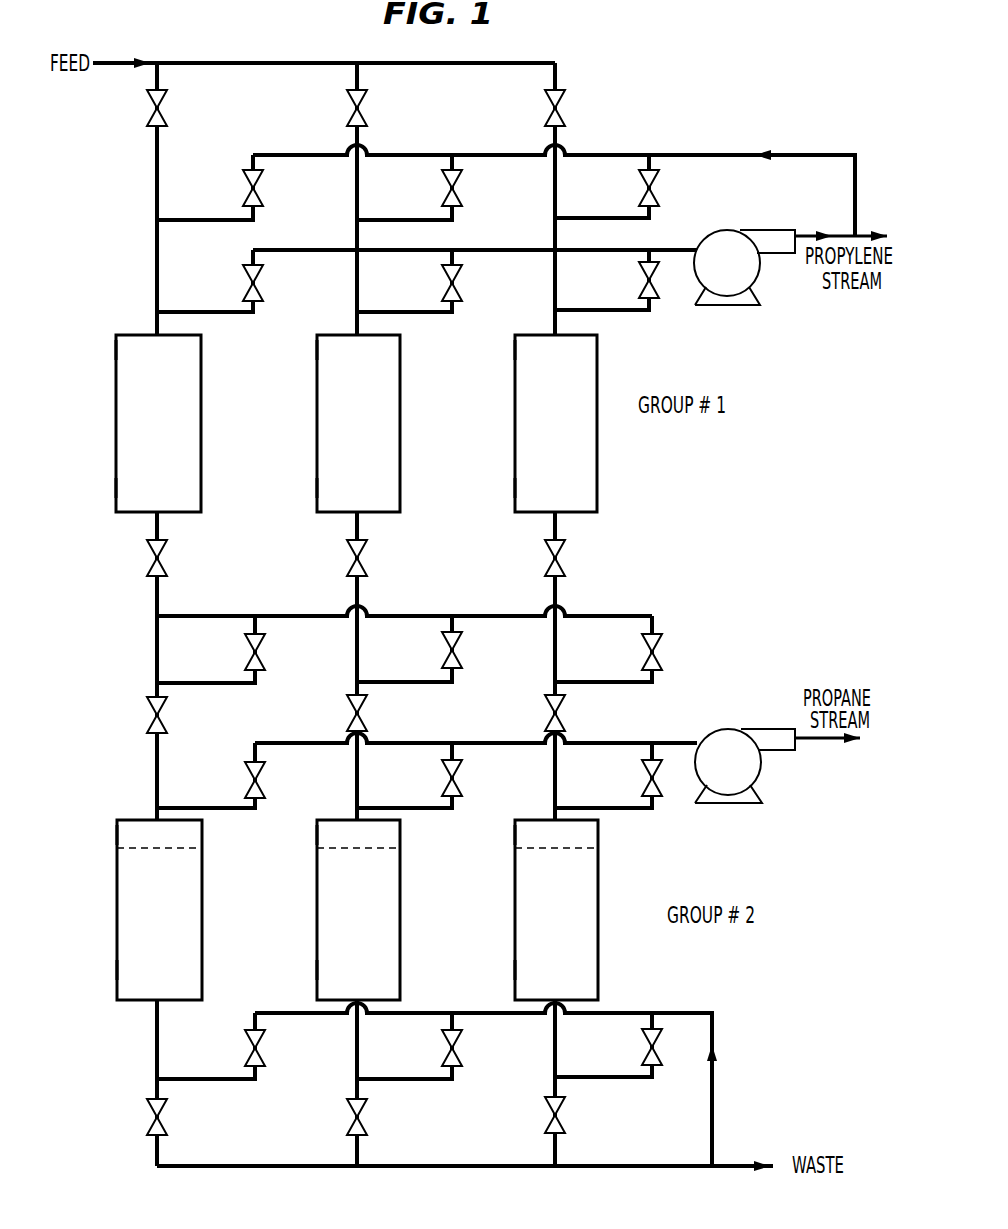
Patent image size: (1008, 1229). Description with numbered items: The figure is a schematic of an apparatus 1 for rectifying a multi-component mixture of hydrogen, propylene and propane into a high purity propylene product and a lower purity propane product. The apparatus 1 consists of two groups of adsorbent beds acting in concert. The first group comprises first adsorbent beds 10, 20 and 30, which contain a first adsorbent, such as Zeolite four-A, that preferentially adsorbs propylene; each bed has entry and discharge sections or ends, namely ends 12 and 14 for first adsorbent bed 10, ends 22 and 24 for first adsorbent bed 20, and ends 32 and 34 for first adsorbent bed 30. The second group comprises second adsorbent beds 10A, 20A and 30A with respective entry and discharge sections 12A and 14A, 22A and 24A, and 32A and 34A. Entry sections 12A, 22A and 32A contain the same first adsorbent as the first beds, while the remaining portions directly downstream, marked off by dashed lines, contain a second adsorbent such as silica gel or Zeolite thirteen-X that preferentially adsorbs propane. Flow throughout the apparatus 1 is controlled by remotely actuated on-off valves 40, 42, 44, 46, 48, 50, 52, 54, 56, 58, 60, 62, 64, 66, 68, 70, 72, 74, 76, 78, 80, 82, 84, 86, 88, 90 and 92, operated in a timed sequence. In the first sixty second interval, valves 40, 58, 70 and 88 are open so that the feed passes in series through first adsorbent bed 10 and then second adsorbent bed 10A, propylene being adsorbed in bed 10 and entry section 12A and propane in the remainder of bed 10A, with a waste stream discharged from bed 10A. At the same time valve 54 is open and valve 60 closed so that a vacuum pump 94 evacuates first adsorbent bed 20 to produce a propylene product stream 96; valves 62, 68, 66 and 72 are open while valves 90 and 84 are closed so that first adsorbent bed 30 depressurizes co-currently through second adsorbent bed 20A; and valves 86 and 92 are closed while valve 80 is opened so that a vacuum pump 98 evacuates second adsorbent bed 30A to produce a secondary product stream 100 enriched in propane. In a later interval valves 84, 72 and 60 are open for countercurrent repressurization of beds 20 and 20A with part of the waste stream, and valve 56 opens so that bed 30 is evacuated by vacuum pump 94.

The apparatus 1 is at (120, 652).
The first adsorbent bed 10 is at (170, 434).
The entry section 12 is at (124, 348).
The discharge section 14 is at (130, 487).
The first adsorbent bed 20 is at (370, 434).
The entry section 22 is at (324, 348).
The discharge section 24 is at (330, 487).
The first adsorbent bed 30 is at (568, 434).
The entry section 32 is at (524, 348).
The discharge section 34 is at (529, 487).
The second adsorbent bed 10A is at (176, 920).
The entry section 12A is at (130, 832).
The discharge section 14A is at (136, 967).
The second adsorbent bed 20A is at (376, 920).
The entry section 22A is at (330, 832).
The discharge section 24A is at (336, 967).
The second adsorbent bed 30A is at (574, 920).
The entry section 32A is at (528, 832).
The discharge section 34A is at (534, 967).
The on-off valve 40 is at (164, 99).
The on-off valve 42 is at (364, 99).
The on-off valve 44 is at (562, 99).
The on-off valve 46 is at (260, 179).
The on-off valve 48 is at (459, 179).
The on-off valve 50 is at (656, 179).
The on-off valve 52 is at (260, 274).
The on-off valve 54 is at (459, 274).
The on-off valve 56 is at (656, 292).
The on-off valve 58 is at (164, 549).
The on-off valve 60 is at (364, 549).
The on-off valve 62 is at (562, 549).
The on-off valve 64 is at (262, 643).
The on-off valve 66 is at (459, 641).
The on-off valve 68 is at (659, 643).
The on-off valve 70 is at (164, 706).
The on-off valve 72 is at (364, 704).
The on-off valve 74 is at (562, 704).
The on-off valve 76 is at (262, 771).
The on-off valve 78 is at (459, 769).
The on-off valve 80 is at (645, 770).
The on-off valve 82 is at (262, 1039).
The on-off valve 84 is at (459, 1039).
The on-off valve 86 is at (659, 1038).
The on-off valve 88 is at (164, 1108).
The on-off valve 90 is at (364, 1108).
The on-off valve 92 is at (562, 1106).
The vacuum pump 94 is at (745, 305).
The propylene product stream 96 is at (851, 235).
The vacuum pump 98 is at (725, 803).
The secondary product stream 100 is at (835, 745).